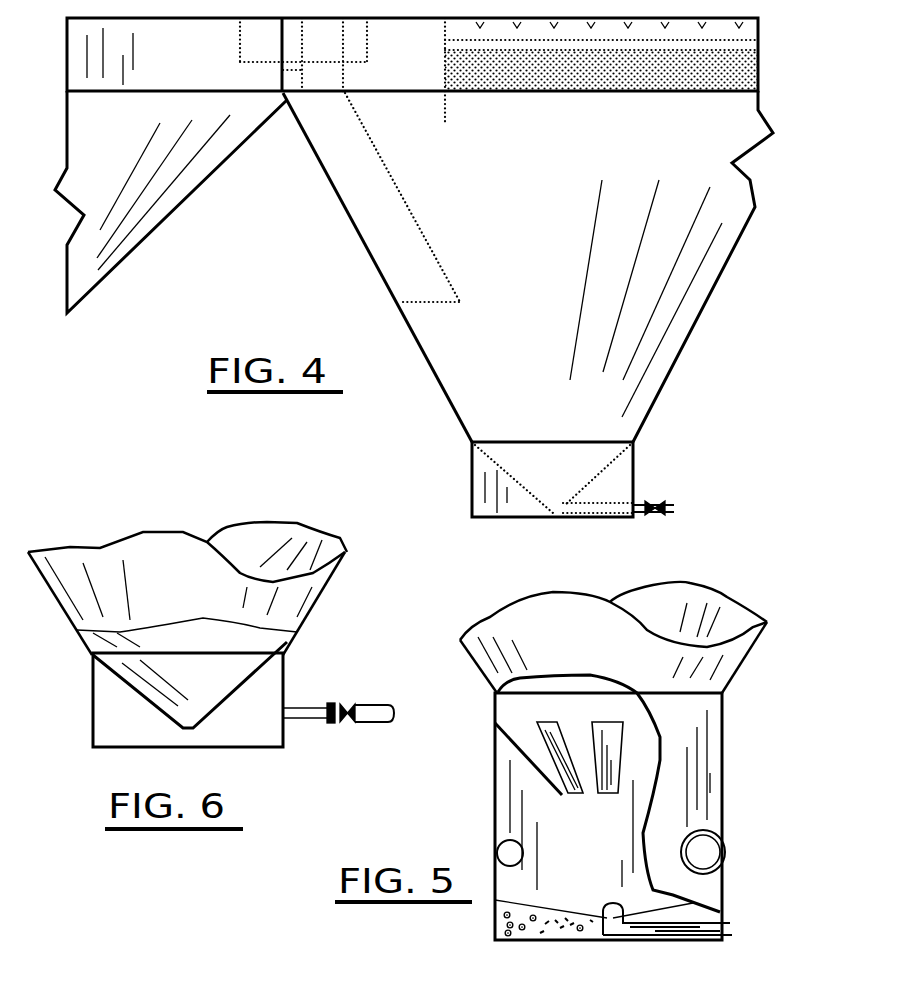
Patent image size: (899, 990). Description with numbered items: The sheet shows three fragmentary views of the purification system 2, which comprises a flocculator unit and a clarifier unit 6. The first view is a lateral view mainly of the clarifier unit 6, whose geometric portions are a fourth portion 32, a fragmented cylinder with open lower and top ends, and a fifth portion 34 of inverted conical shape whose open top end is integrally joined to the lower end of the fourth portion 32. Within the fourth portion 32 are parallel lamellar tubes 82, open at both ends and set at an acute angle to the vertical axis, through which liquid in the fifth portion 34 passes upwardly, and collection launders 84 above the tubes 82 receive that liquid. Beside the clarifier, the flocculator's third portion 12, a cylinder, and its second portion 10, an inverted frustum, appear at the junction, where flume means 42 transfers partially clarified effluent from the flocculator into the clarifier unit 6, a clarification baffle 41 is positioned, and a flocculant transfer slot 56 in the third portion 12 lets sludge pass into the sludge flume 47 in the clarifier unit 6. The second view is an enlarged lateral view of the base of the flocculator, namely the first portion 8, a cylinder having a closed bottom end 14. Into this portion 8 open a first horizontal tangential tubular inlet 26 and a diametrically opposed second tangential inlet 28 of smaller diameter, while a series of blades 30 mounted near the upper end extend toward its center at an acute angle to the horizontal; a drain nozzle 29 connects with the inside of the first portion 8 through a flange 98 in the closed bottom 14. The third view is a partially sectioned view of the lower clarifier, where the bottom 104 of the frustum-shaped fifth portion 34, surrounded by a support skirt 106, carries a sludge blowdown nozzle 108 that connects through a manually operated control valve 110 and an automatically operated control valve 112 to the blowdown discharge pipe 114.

In FIG. 4, the purification system 2 is at (724, 258).
In FIG. 5, the purification system 2 is at (752, 637).
In FIG. 4, the clarifier unit 6 is at (668, 362).
In FIG. 6, the clarifier unit 6 is at (227, 527).
In FIG. 5, the first portion 8 is at (710, 822).
In FIG. 4, the second portion 10 is at (195, 167).
In FIG. 5, the second portion 10 is at (722, 675).
In FIG. 4, the third portion 12 is at (205, 80).
In FIG. 5, the closed bottom end 14 is at (540, 913).
In FIG. 5, the first tangential tubular inlet 26 is at (703, 855).
In FIG. 5, the second tangential tubular inlet 28 is at (498, 853).
In FIG. 5, the drain nozzle 29 is at (730, 925).
In FIG. 5, the blades 30 is at (627, 777).
In FIG. 4, the fourth portion 32 is at (422, 80).
In FIG. 4, the fifth portion 34 is at (522, 360).
In FIG. 6, the fifth portion 34 is at (297, 615).
In FIG. 4, the clarification baffle 41 is at (447, 108).
In FIG. 4, the flume means 42 is at (323, 43).
In FIG. 4, the sludge flume 47 is at (408, 257).
In FIG. 4, the flocculant transfer slot 56 is at (295, 72).
In FIG. 4, the parallel tubes 82 is at (718, 68).
In FIG. 4, the collection launders 84 is at (710, 20).
In FIG. 5, the flange 98 is at (620, 935).
In FIG. 6, the bottom 104 is at (230, 707).
In FIG. 4, the support skirt 106 is at (633, 478).
In FIG. 6, the support skirt 106 is at (92, 713).
In FIG. 6, the sludge blowdown nozzle 108 is at (327, 722).
In FIG. 6, the control valve 110 is at (335, 708).
In FIG. 6, the control valve 112 is at (350, 723).
In FIG. 6, the blowdown discharge pipe 114 is at (373, 705).